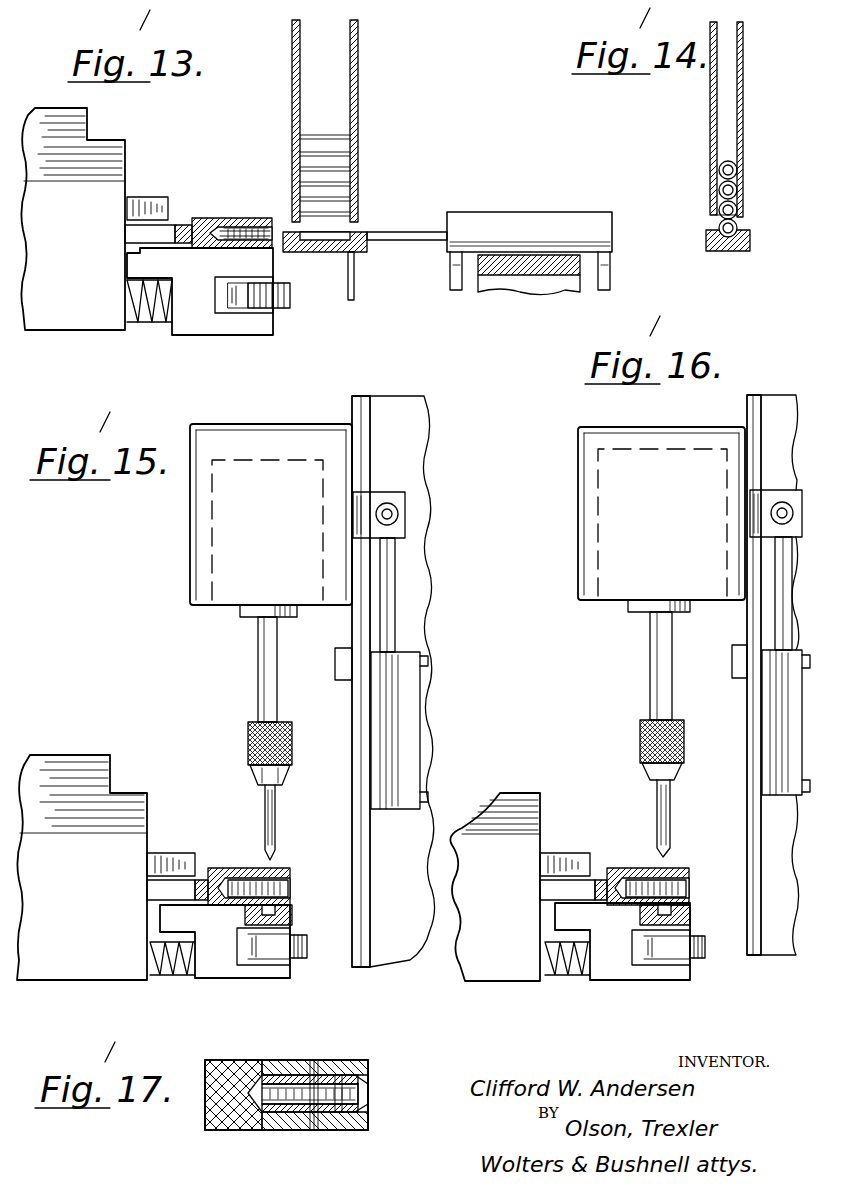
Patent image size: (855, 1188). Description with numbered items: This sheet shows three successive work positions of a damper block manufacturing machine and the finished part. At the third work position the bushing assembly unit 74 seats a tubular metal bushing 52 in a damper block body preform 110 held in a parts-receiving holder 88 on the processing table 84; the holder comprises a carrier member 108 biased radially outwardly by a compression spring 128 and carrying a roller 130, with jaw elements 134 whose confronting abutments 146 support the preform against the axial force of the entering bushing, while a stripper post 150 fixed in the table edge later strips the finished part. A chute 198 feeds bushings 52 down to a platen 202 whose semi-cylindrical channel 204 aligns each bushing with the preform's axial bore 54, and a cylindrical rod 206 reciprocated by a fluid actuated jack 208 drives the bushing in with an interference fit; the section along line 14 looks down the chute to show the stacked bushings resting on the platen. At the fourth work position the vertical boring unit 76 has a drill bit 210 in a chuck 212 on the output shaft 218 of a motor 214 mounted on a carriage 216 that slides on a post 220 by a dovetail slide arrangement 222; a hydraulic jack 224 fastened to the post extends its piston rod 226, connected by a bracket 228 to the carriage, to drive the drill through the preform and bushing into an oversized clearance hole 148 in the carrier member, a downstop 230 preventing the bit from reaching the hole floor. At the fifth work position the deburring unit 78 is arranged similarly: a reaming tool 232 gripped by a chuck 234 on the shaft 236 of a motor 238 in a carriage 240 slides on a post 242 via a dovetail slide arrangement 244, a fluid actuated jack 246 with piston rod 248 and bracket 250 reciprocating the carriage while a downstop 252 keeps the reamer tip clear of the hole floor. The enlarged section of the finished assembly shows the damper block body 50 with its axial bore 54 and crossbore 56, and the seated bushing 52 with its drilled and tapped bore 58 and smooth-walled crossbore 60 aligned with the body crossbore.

In FIG. 13, the section line 14 is at (357, 14).
In FIG. 17, the damper block body 50 is at (203, 1102).
In FIG. 13, the tubular metal bushing 52 is at (245, 232).
In FIG. 14, the tubular metal bushing 52 is at (742, 211).
In FIG. 15, the tubular metal bushing 52 is at (292, 890).
In FIG. 16, the tubular metal bushing 52 is at (690, 890).
In FIG. 17, the tubular metal bushing 52 is at (282, 1072).
In FIG. 13, the axial bore 54 is at (238, 226).
In FIG. 17, the axial bore 54 is at (278, 1132).
In FIG. 17, the crossbore 56 is at (320, 1060).
In FIG. 17, the drilled and tapped bore 58 is at (360, 1094).
In FIG. 17, the smooth-walled crossbore 60 is at (336, 1074).
In FIG. 13, the bushing assembly unit 74 is at (436, 138).
In FIG. 15, the vertical boring unit 76 is at (142, 646).
In FIG. 16, the deburring unit 78 is at (548, 660).
In FIG. 13, the processing table 84 is at (80, 316).
In FIG. 15, the processing table 84 is at (78, 966).
In FIG. 16, the processing table 84 is at (526, 778).
In FIG. 13, the parts-receiving holder 88 is at (255, 338).
In FIG. 15, the parts-receiving holder 88 is at (169, 778).
In FIG. 16, the parts-receiving holder 88 is at (566, 778).
In FIG. 13, the carrier member 108 is at (186, 338).
In FIG. 15, the carrier member 108 is at (190, 980).
In FIG. 16, the carrier member 108 is at (588, 980).
In FIG. 13, the damper block body preform 110 is at (202, 218).
In FIG. 15, the damper block body preform 110 is at (224, 870).
In FIG. 16, the damper block body preform 110 is at (620, 870).
In FIG. 13, the compression spring 128 is at (145, 318).
In FIG. 15, the compression spring 128 is at (162, 965).
In FIG. 16, the compression spring 128 is at (560, 965).
In FIG. 13, the roller 130 is at (290, 298).
In FIG. 15, the roller 130 is at (310, 950).
In FIG. 16, the roller 130 is at (708, 950).
In FIG. 13, the jaw elements 134 is at (145, 236).
In FIG. 15, the jaw elements 134 is at (162, 893).
In FIG. 16, the jaw elements 134 is at (552, 893).
In FIG. 13, the abutments 146 is at (178, 225).
In FIG. 15, the clearance hole 148 is at (295, 916).
In FIG. 16, the clearance hole 148 is at (695, 915).
In FIG. 13, the stripper post 150 is at (136, 196).
In FIG. 15, the stripper post 150 is at (162, 858).
In FIG. 16, the stripper post 150 is at (556, 858).
In FIG. 13, the chute 198 is at (276, 72).
In FIG. 14, the chute 198 is at (752, 70).
In FIG. 13, the platen 202 is at (298, 252).
In FIG. 14, the platen 202 is at (730, 253).
In FIG. 13, the semi-cylindrical channel 204 is at (350, 300).
In FIG. 14, the semi-cylindrical channel 204 is at (718, 218).
In FIG. 13, the cylindrical rod 206 is at (405, 230).
In FIG. 13, the fluid actuated jack 208 is at (498, 212).
In FIG. 15, the drill bit 210 is at (272, 832).
In FIG. 15, the chuck 212 is at (248, 738).
In FIG. 15, the motor 214 is at (212, 495).
In FIG. 15, the carriage 216 is at (190, 560).
In FIG. 15, the output shaft 218 is at (258, 643).
In FIG. 15, the post 220 is at (395, 420).
In FIG. 15, the dovetail slide arrangement 222 is at (362, 410).
In FIG. 15, the hydraulic jack 224 is at (410, 712).
In FIG. 15, the piston rod 226 is at (390, 578).
In FIG. 15, the bracket 228 is at (392, 495).
In FIG. 15, the downstop 230 is at (342, 680).
In FIG. 16, the reaming tool 232 is at (672, 840).
In FIG. 16, the chuck 234 is at (640, 738).
In FIG. 16, the shaft 236 is at (650, 652).
In FIG. 16, the motor 238 is at (620, 518).
In FIG. 16, the carriage 240 is at (578, 548).
In FIG. 16, the post 242 is at (777, 945).
In FIG. 16, the dovetail slide arrangement 244 is at (760, 395).
In FIG. 16, the fluid actuated jack 246 is at (780, 660).
In FIG. 16, the piston rod 248 is at (782, 600).
In FIG. 16, the bracket 250 is at (778, 490).
In FIG. 16, the downstop 252 is at (738, 668).